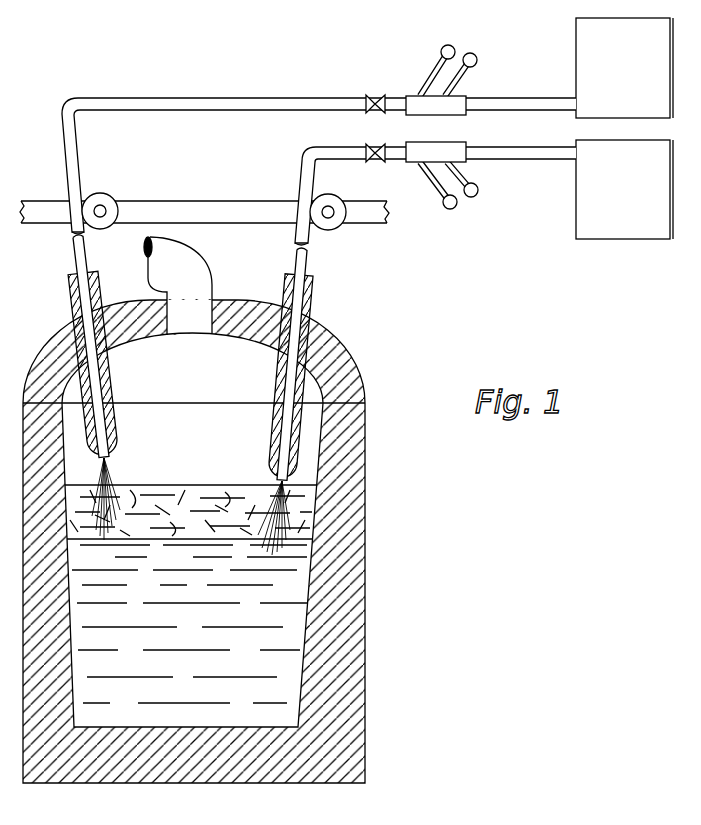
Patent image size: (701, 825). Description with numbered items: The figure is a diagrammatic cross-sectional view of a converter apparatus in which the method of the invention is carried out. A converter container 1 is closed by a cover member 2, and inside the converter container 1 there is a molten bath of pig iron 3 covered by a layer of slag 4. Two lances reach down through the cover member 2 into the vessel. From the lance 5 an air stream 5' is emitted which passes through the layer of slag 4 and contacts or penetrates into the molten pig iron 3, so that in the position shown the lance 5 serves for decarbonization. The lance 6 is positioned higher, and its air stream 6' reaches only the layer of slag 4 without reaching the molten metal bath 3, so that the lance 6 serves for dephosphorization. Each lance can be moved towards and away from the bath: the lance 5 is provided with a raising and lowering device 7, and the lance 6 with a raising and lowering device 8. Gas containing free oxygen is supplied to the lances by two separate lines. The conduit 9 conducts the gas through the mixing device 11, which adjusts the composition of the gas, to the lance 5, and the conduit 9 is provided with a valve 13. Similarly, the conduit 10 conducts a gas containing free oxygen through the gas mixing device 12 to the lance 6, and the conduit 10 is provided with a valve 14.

The converter container 1 is at (350, 642).
The cover member 2 is at (342, 365).
The molten bath of pig iron 3 is at (297, 617).
The layer of slag 4 is at (182, 500).
The lance 5 is at (276, 364).
The air stream 5' is at (257, 504).
The lance 6 is at (106, 346).
The air stream 6' is at (121, 496).
The raising and lowering device 7 is at (333, 223).
The raising and lowering device 8 is at (104, 222).
The conduit 9 is at (542, 150).
The conduit 10 is at (537, 106).
The mixing device 11 is at (420, 153).
The gas mixing device 12 is at (416, 103).
The valve 13 is at (377, 160).
The valve 14 is at (371, 98).